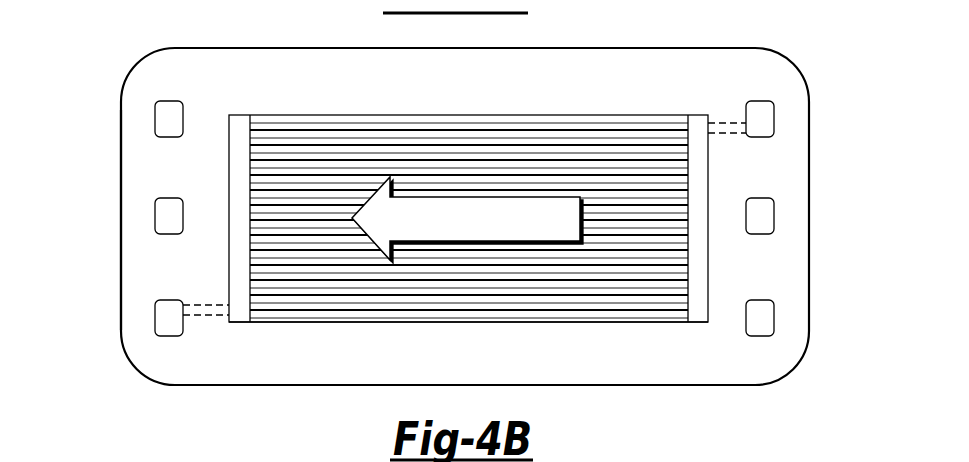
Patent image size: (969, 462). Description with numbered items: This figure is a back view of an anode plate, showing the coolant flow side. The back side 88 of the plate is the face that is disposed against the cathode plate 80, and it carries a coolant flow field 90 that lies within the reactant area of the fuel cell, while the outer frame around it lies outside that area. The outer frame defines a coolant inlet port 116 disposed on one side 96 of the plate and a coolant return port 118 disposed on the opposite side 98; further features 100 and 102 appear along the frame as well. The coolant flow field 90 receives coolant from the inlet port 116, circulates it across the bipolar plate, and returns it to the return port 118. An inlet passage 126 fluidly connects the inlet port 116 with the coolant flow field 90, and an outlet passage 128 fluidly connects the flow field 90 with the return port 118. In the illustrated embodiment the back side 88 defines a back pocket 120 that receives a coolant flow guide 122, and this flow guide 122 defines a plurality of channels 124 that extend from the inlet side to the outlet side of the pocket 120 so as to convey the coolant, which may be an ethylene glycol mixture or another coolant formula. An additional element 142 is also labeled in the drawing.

The back side 88 is at (489, 231).
The side 96 is at (790, 153).
The side 98 is at (118, 167).
The coolant inlet port 116 is at (763, 113).
The second end of plate 100 is at (758, 215).
The mounting port 102 is at (167, 217).
The coolant return port 118 is at (170, 318).
The inlet passage 126 is at (727, 120).
The outlet passage 128 is at (203, 315).
The coolant flow field 90 is at (468, 224).
The channels 124 is at (303, 130).
The coolant flow guide 122 is at (358, 293).
The back pocket 120 is at (598, 322).
The fastener 142 is at (655, 450).
The cathode plate 80 is at (942, 453).